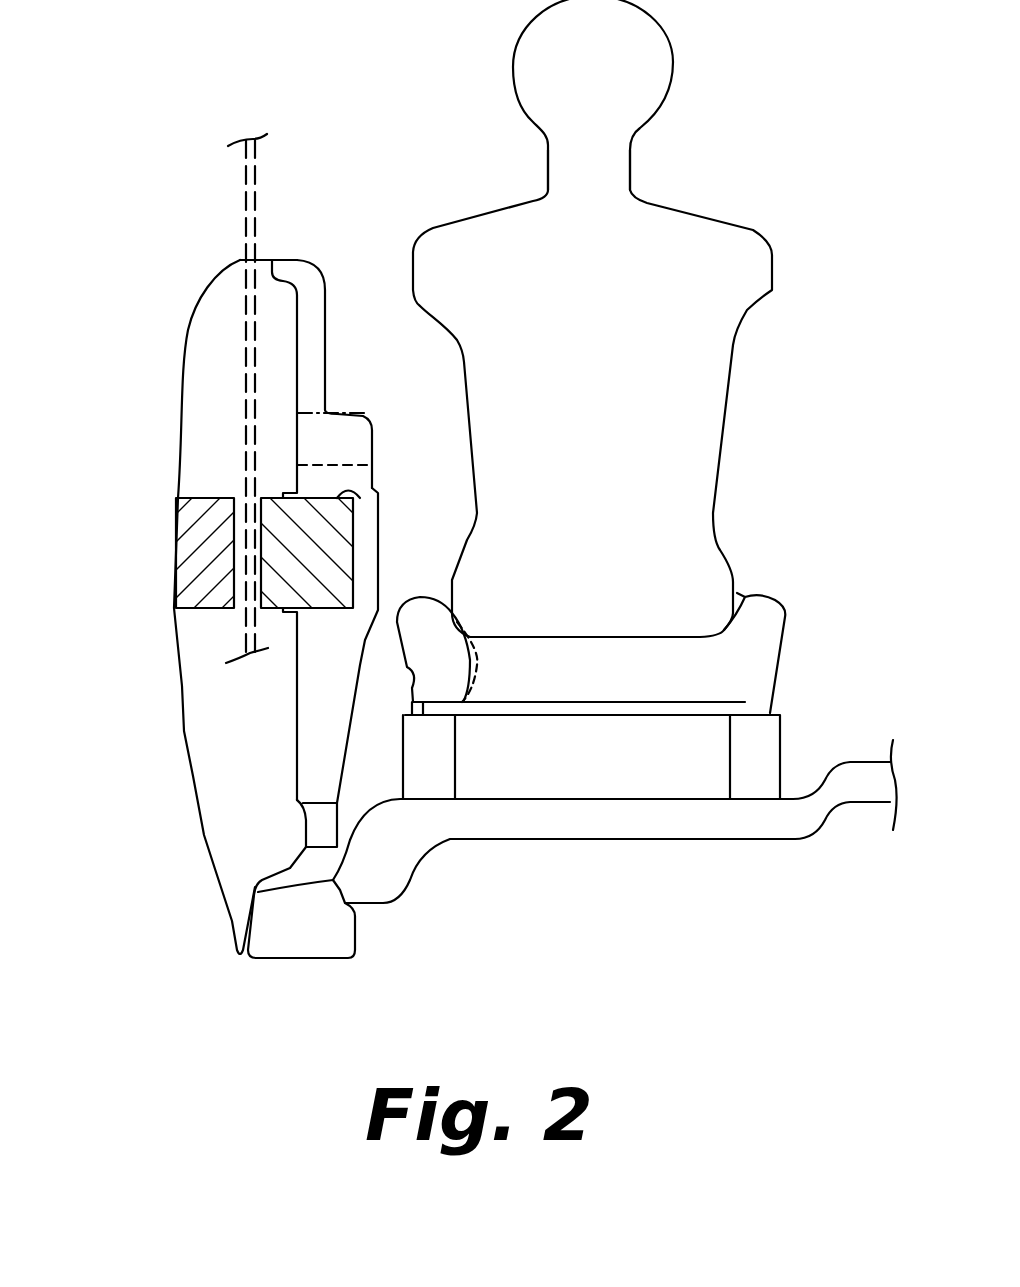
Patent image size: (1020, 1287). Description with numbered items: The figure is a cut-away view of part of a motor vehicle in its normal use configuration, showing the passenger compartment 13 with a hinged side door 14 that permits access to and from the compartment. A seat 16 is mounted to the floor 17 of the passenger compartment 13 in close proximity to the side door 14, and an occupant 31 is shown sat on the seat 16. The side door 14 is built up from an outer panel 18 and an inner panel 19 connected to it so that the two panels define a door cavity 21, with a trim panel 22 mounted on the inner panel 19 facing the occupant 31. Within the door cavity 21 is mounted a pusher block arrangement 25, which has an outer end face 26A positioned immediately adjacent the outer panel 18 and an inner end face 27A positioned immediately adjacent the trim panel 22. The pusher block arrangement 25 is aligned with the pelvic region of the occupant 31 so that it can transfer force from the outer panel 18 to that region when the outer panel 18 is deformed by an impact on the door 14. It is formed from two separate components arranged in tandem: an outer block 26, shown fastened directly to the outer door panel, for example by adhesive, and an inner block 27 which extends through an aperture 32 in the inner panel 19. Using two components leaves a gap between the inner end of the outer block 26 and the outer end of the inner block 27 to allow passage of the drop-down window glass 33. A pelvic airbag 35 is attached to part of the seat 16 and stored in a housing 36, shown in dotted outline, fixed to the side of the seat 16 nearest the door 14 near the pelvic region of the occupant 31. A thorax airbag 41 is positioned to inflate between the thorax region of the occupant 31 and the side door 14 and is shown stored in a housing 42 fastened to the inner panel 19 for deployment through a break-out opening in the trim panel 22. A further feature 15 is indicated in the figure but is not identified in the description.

The passenger compartment 13 is at (846, 373).
The hinged side door 14 is at (190, 276).
The lower support assembly 15 is at (175, 822).
The seat 16 is at (783, 650).
The floor 17 is at (542, 800).
The outer panel 18 is at (183, 353).
The inner panel 19 is at (298, 261).
The door cavity 21 is at (213, 750).
The trim panel 22 is at (326, 342).
The pusher block arrangement 25 is at (190, 628).
The outer block 26 is at (198, 496).
The outer end face 26A is at (175, 557).
The inner block 27 is at (372, 493).
The inner end face 27A is at (355, 553).
The occupant 31 is at (630, 156).
The aperture 32 is at (298, 612).
The drop-down window glass 33 is at (245, 188).
The pelvic airbag 35 is at (451, 669).
The housing 36 is at (472, 678).
The thorax airbag 41 is at (328, 436).
The housing 42 is at (358, 464).